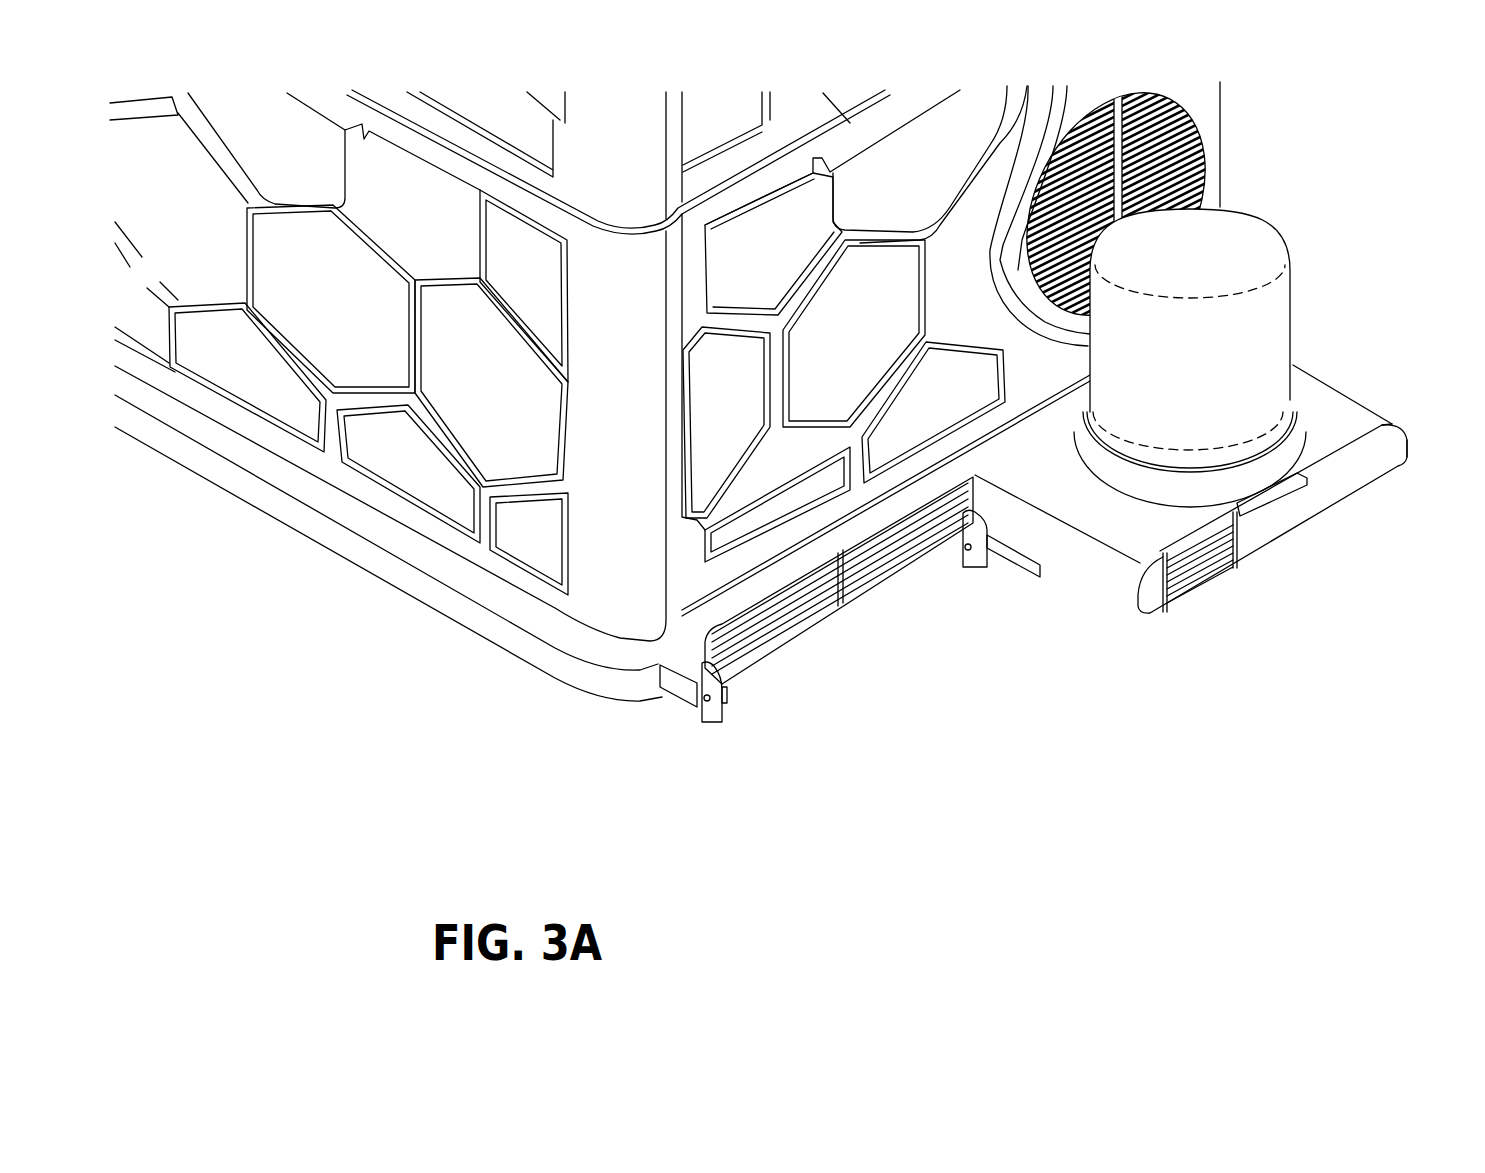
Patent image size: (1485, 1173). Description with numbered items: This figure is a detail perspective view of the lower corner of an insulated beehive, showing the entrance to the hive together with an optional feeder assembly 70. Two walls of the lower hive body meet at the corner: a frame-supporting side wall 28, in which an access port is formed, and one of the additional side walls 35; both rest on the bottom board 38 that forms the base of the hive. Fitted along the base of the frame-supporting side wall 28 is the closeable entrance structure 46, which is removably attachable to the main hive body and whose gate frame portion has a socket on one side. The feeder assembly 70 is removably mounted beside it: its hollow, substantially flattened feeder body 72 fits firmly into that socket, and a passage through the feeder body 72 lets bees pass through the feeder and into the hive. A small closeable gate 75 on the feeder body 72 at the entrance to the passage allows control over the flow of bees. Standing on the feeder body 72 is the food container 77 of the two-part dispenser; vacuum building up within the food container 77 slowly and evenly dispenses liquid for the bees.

The frame-supporting side wall 28 is at (878, 358).
The side wall 35 is at (377, 319).
The bottom board 38 is at (447, 595).
The entrance structure 46 is at (854, 636).
The feeder assembly 70 is at (1380, 341).
The feeder body 72 is at (1122, 557).
The gate 75 is at (1237, 532).
The food container 77 is at (1297, 283).